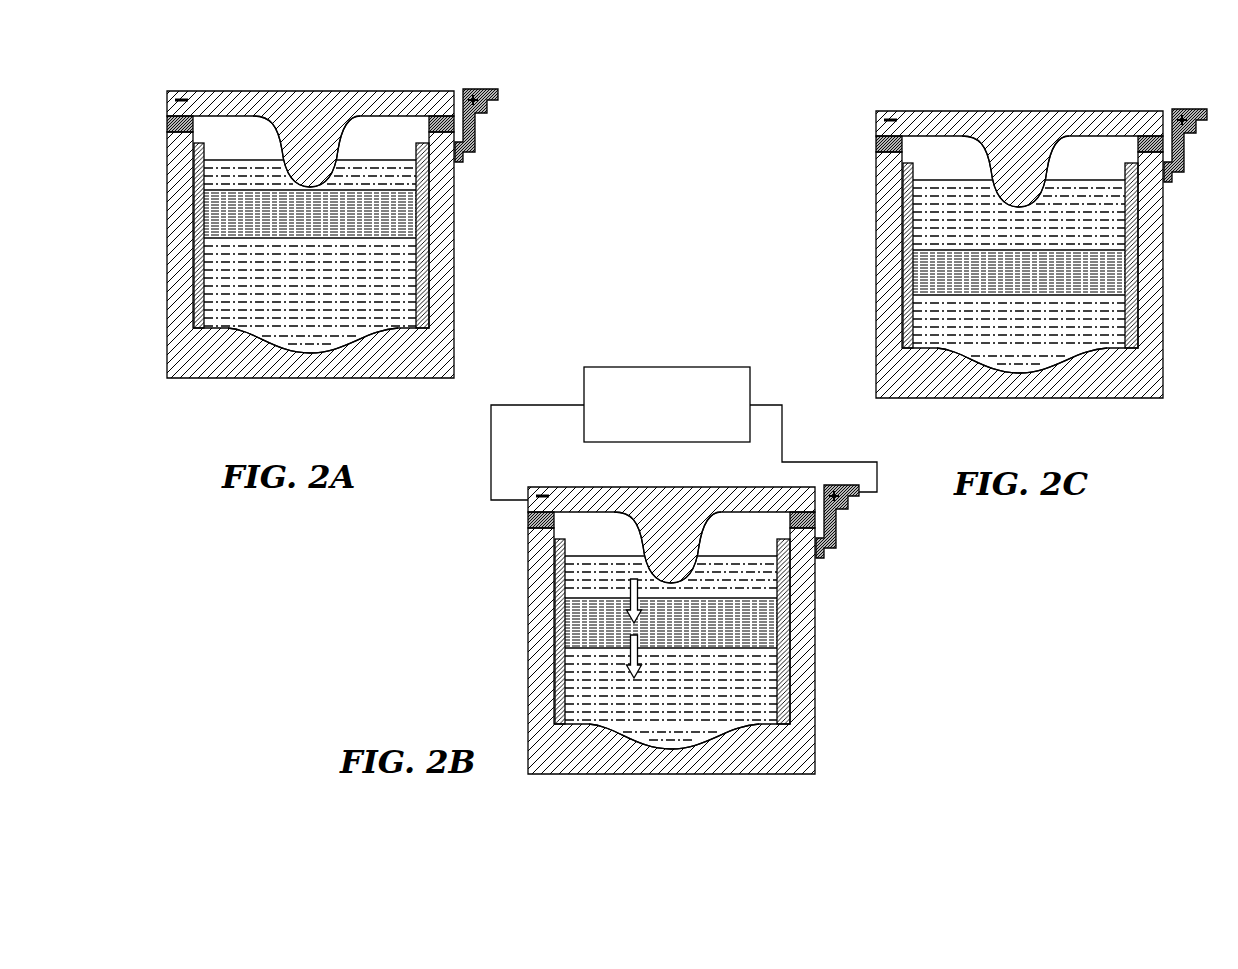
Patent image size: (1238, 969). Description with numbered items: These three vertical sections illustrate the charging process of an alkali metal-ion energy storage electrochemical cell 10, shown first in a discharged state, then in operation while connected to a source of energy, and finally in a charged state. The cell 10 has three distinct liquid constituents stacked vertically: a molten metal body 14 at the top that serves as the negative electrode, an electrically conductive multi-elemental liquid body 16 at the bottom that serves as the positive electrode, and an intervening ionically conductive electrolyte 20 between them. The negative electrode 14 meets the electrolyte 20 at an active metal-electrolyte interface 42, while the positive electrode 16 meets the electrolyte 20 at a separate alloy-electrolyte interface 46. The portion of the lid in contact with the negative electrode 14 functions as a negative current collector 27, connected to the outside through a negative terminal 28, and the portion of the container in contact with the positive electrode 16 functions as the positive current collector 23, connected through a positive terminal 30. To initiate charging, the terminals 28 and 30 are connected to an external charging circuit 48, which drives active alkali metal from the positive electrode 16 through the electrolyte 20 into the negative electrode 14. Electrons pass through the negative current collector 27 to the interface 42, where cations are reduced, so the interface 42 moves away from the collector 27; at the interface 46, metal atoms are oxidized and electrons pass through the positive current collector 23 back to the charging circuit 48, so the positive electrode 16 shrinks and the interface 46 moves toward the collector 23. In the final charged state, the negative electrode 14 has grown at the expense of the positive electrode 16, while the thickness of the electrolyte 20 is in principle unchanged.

In FIG. 2A, the alkali metal ion energy storage cell 10 is at (179, 68).
In FIG. 2B, the alkali metal ion energy storage cell 10 is at (660, 605).
In FIG. 2C, the alkali metal ion energy storage cell 10 is at (989, 229).
In FIG. 2A, the molten metal body 14 is at (215, 170).
In FIG. 2B, the molten metal body 14 is at (622, 572).
In FIG. 2C, the molten metal body 14 is at (970, 211).
In FIG. 2A, the electrically conductive multi-elemental liquid body 16 is at (215, 293).
In FIG. 2B, the electrically conductive multi-elemental liquid body 16 is at (622, 698).
In FIG. 2C, the electrically conductive multi-elemental liquid body 16 is at (970, 333).
In FIG. 2A, the ionically conductive electrolyte 20 is at (215, 215).
In FIG. 2B, the ionically conductive electrolyte 20 is at (622, 623).
In FIG. 2C, the ionically conductive electrolyte 20 is at (970, 272).
In FIG. 2A, the positive current collector 23 is at (328, 353).
In FIG. 2B, the positive current collector 23 is at (674, 769).
In FIG. 2C, the positive current collector 23 is at (1022, 393).
In FIG. 2A, the negative current collector 27 is at (313, 163).
In FIG. 2B, the negative current collector 27 is at (747, 552).
In FIG. 2C, the negative current collector 27 is at (1094, 174).
In FIG. 2A, the negative terminal 28 is at (167, 102).
In FIG. 2B, the negative terminal 28 is at (632, 524).
In FIG. 2C, the negative terminal 28 is at (989, 158).
In FIG. 2A, the positive terminal 30 is at (498, 91).
In FIG. 2B, the positive terminal 30 is at (865, 521).
In FIG. 2C, the positive terminal 30 is at (1194, 121).
In FIG. 2A, the active metal-electrolyte interface 42 is at (382, 190).
In FIG. 2B, the active metal-electrolyte interface 42 is at (722, 618).
In FIG. 2C, the active metal-electrolyte interface 42 is at (1069, 267).
In FIG. 2A, the alloy-electrolyte interface 46 is at (382, 240).
In FIG. 2B, the alloy-electrolyte interface 46 is at (722, 667).
In FIG. 2C, the alloy-electrolyte interface 46 is at (1069, 314).
In FIG. 2B, the external charging circuit 48 is at (667, 385).